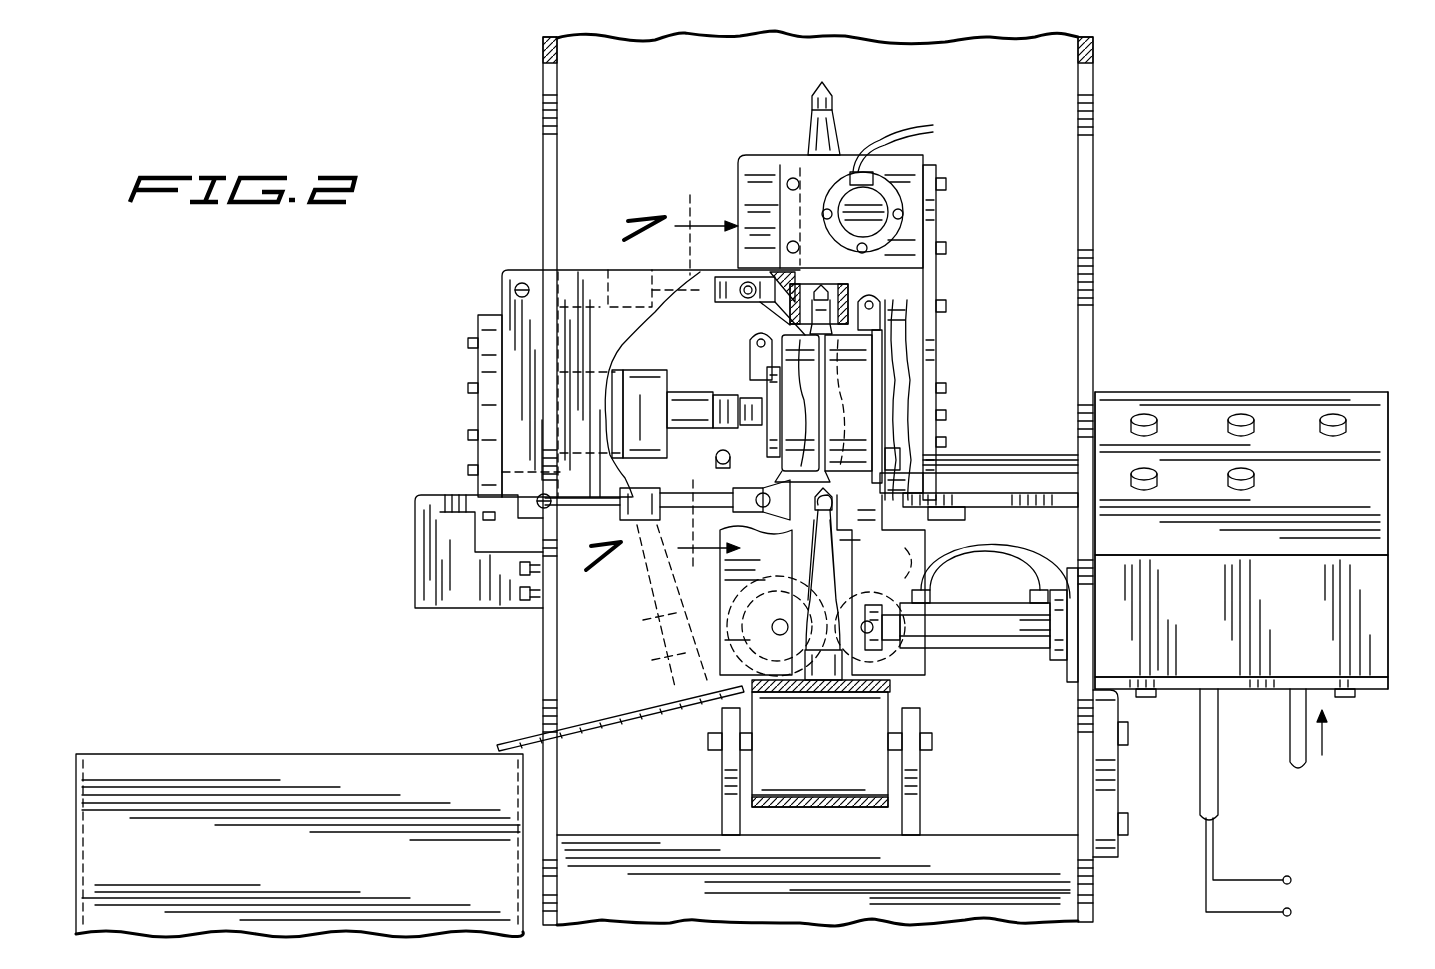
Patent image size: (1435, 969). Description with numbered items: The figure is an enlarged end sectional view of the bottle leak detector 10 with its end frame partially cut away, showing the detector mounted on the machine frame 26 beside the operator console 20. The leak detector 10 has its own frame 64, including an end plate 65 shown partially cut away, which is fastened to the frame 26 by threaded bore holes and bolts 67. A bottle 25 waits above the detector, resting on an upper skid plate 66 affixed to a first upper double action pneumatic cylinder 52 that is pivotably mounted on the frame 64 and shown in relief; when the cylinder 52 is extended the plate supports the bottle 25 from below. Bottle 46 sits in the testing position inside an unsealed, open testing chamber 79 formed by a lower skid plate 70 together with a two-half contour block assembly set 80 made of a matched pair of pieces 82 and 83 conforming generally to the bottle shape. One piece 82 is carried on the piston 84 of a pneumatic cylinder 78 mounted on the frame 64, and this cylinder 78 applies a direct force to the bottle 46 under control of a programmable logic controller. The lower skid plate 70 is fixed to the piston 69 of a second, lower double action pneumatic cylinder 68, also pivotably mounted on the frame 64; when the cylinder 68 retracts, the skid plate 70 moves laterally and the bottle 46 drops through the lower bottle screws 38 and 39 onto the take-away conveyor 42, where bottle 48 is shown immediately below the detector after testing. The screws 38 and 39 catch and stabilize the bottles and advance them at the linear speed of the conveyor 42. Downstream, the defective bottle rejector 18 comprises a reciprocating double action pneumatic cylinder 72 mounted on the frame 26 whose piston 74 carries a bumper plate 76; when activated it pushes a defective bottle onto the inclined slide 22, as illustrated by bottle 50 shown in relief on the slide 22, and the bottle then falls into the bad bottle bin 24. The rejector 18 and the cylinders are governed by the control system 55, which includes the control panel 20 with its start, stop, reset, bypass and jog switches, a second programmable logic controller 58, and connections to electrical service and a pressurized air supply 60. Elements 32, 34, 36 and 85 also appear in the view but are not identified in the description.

The leak detector 10 is at (496, 284).
The defective bottle rejector 18 is at (1015, 615).
The control panel 20 is at (1188, 418).
The inclined slide 22 is at (598, 722).
The bad bottle bin 24 is at (150, 782).
The bottle 25 is at (826, 142).
The frame 26 is at (1090, 112).
The hole 32 is at (790, 178).
The hole 34 is at (786, 242).
The bushing 36 is at (874, 196).
The lower bottle screw 38 is at (762, 612).
The lower bottle screw 39 is at (889, 553).
The take-away conveyor 42 is at (888, 684).
The bottle 46 is at (845, 350).
The bottle 48 is at (826, 664).
The bottle 50 is at (655, 608).
The first upper double action pneumatic cylinder 52 is at (622, 275).
The control system 55 is at (1355, 385).
The second programmable logic controller 58 is at (1212, 778).
The pressurized air supply 60 is at (1296, 718).
The frame 64 is at (918, 400).
The end plate 65 is at (568, 349).
The upper skid plate 66 is at (776, 272).
The bolts 67 is at (470, 344).
The second lower double action pneumatic cylinder 68 is at (590, 506).
The piston 69 is at (712, 492).
The lower skid plate 70 is at (790, 497).
The reciprocating double action pneumatic cylinder 72 is at (1025, 646).
The piston 74 is at (898, 626).
The bumper plate 76 is at (900, 640).
The pneumatic cylinder 78 is at (652, 380).
The testing chamber 79 is at (878, 372).
The two-half contour block assembly set 80 is at (848, 433).
The contour block piece 82 is at (770, 287).
The contour block piece 83 is at (860, 350).
The piston 84 is at (745, 395).
The stop 85 is at (890, 466).